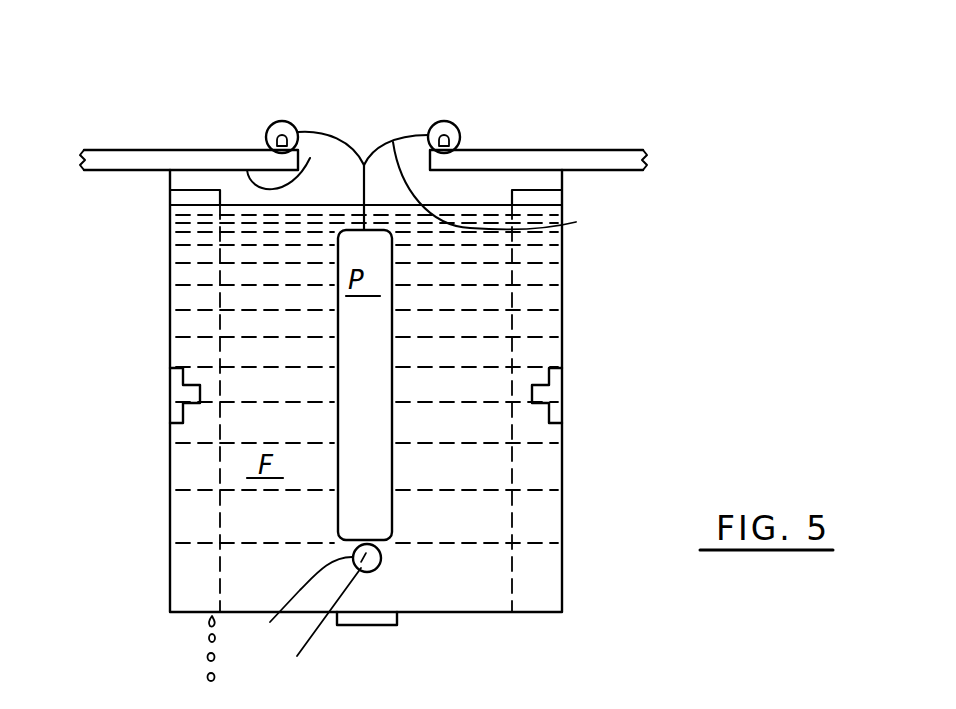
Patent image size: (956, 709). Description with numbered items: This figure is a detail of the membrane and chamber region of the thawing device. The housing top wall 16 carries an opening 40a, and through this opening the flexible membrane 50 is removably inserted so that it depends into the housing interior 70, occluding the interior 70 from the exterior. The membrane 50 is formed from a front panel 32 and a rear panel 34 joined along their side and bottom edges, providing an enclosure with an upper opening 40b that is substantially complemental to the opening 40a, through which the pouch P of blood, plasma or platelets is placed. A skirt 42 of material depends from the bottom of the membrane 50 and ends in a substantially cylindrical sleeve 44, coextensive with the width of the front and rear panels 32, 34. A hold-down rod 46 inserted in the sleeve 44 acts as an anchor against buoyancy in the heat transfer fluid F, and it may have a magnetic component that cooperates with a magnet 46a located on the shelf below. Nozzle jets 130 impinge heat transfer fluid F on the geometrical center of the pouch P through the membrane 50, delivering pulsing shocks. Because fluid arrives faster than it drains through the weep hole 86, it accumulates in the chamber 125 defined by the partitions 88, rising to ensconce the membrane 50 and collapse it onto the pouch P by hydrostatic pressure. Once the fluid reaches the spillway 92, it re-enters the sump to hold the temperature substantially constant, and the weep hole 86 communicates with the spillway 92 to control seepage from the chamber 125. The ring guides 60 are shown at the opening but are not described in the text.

The top wall 16 is at (573, 148).
The front panel 32 is at (329, 141).
The rear panel 34 is at (539, 224).
The opening 40a is at (246, 150).
The upper opening 40b is at (307, 125).
The skirt 42 is at (380, 551).
The sleeve 44 is at (292, 600).
The hold-down rod 46 is at (312, 620).
The magnet 46a is at (378, 628).
The flexible membrane 50 is at (407, 128).
The guide ring 60 is at (272, 124).
The interior 70 is at (478, 200).
The weep hole 86 is at (212, 612).
The partitions 88 is at (170, 262).
The spillway 92 is at (180, 182).
The chamber 125 is at (476, 528).
The nozzle jet 130 is at (172, 394).